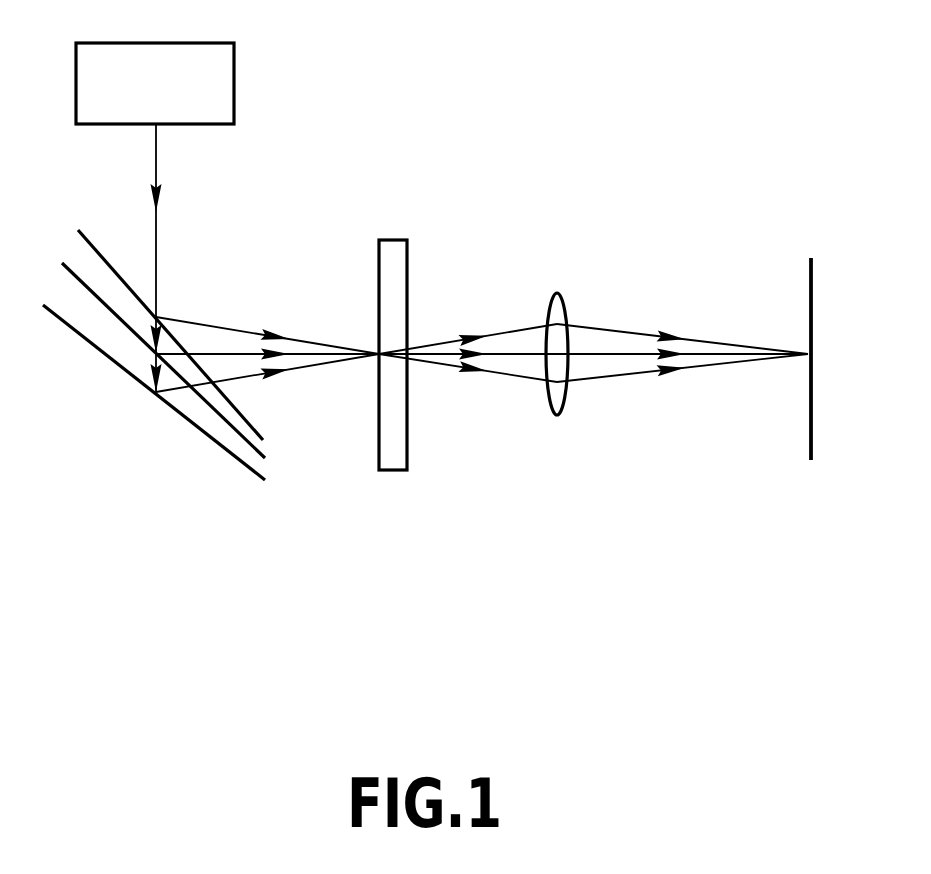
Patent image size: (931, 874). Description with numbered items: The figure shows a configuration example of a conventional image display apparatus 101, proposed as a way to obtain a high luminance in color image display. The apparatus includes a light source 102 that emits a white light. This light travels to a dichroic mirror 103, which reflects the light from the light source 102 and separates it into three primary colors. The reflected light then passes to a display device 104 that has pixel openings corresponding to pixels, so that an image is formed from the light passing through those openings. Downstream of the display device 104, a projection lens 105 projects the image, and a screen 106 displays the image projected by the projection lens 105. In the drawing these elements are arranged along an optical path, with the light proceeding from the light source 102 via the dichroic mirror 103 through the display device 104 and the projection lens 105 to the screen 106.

The image display apparatus 101 is at (574, 212).
The light source 102 is at (234, 70).
The dichroic mirror 103 is at (141, 409).
The display device 104 is at (392, 470).
The projection lens 105 is at (558, 407).
The screen 106 is at (811, 295).